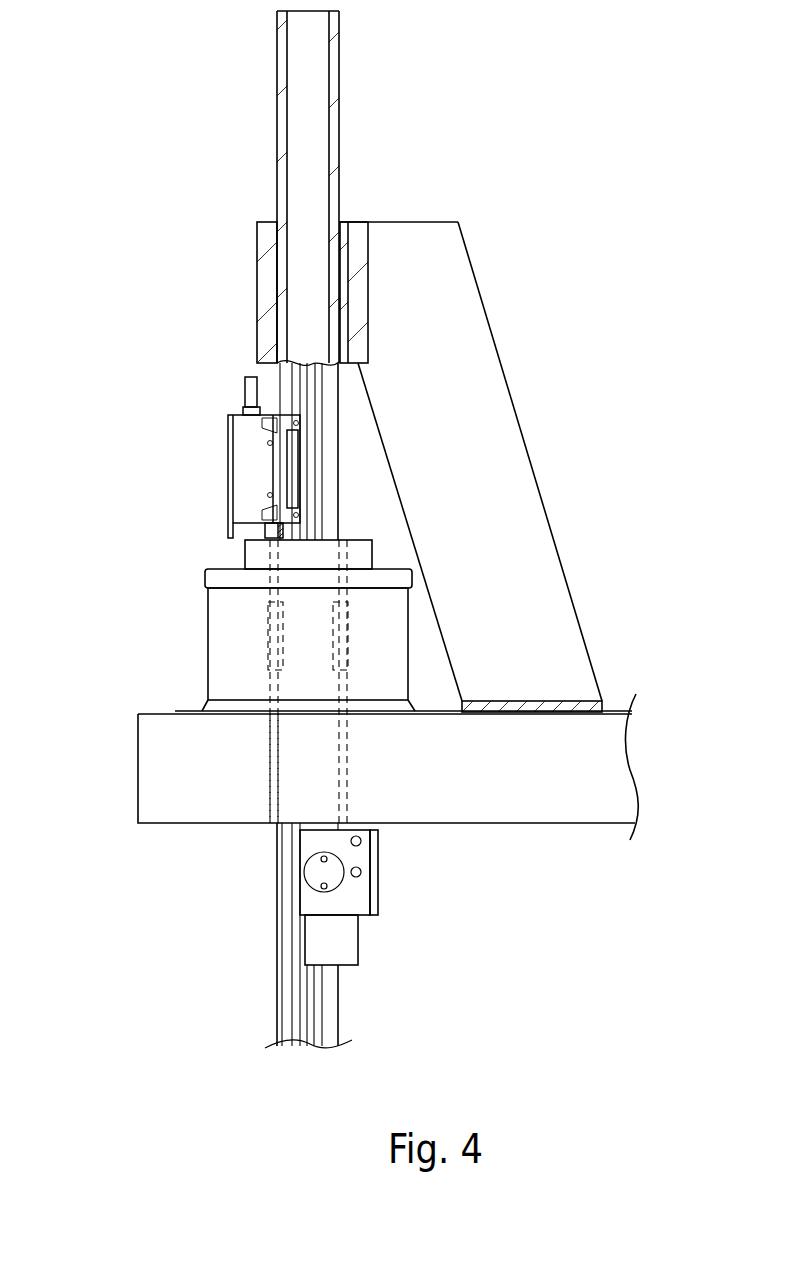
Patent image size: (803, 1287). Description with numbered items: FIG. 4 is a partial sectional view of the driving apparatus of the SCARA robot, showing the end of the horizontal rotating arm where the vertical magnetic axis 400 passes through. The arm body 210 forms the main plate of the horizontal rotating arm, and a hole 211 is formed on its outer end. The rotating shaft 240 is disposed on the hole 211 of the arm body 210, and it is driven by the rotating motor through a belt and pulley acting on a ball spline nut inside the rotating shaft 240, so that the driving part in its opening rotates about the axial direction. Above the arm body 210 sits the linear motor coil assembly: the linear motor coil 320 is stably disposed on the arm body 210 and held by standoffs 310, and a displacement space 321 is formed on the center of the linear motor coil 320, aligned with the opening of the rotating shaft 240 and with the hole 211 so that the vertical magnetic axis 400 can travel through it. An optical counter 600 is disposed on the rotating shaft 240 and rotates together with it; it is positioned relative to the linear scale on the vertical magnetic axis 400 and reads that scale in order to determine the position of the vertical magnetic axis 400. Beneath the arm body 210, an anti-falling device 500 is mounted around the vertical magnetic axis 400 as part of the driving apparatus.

The arm body 210 is at (146, 768).
The hole 211 is at (268, 777).
The rotating shaft 240 is at (253, 549).
The standoffs 310 is at (541, 512).
The linear motor coil 320 is at (363, 265).
The displacement space 321 is at (355, 268).
The vertical magnetic axis 400 is at (336, 997).
The anti-falling device 500 is at (355, 890).
The optical counter 600 is at (240, 457).